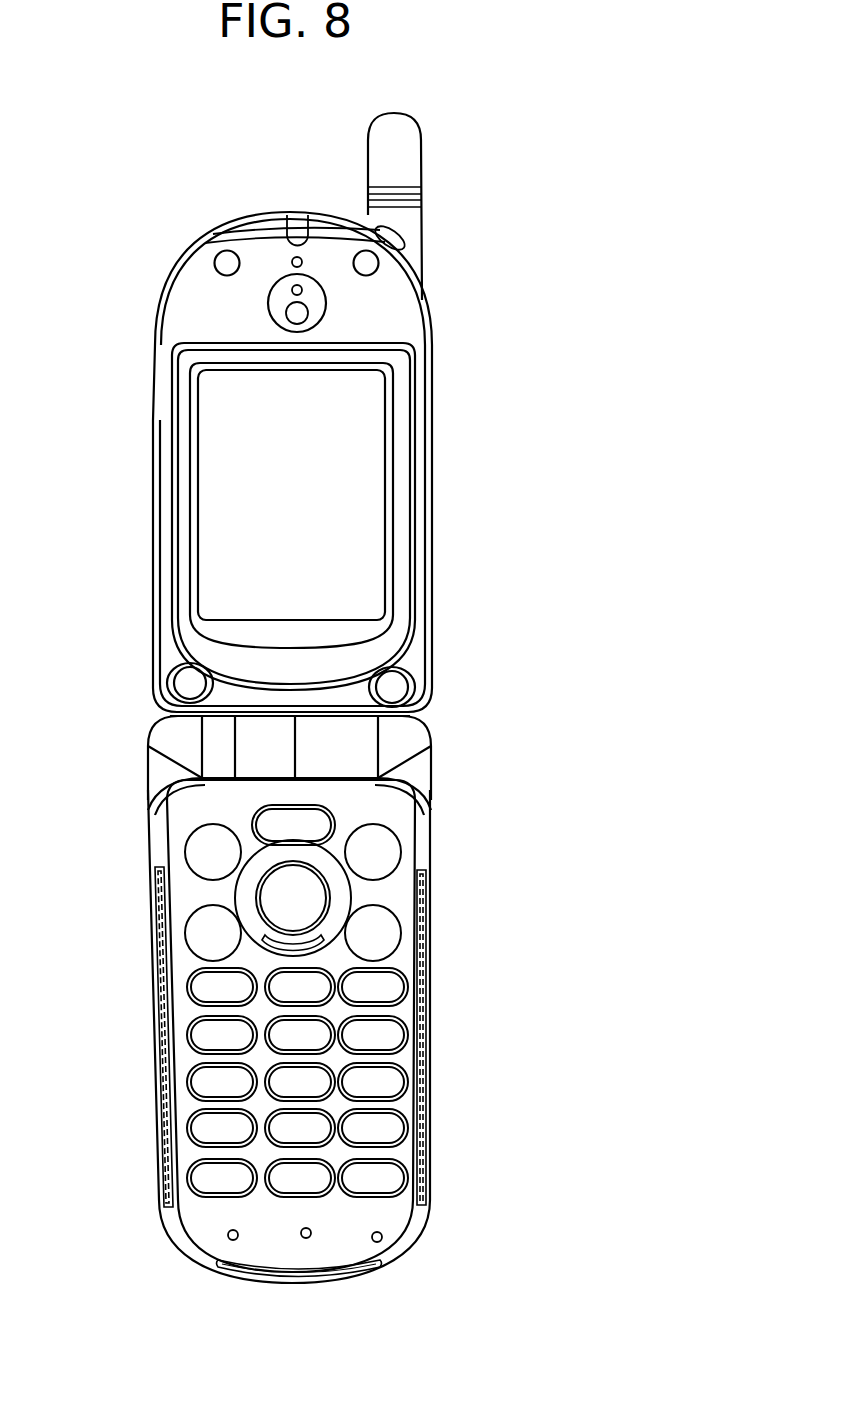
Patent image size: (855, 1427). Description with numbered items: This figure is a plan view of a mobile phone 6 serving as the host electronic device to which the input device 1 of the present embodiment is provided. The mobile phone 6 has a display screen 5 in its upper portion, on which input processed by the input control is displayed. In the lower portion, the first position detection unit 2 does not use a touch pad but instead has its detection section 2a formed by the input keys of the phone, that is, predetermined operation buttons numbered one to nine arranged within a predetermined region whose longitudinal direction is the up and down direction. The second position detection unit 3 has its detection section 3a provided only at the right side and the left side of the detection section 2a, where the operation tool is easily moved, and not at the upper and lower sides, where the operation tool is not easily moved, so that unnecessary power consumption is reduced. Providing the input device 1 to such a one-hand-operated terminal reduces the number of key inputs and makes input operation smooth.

The input device 1 is at (215, 1210).
The first position detection unit 2 is at (344, 1060).
The detection section 2a is at (396, 1128).
The second position detection unit 3 is at (448, 974).
The detection section 3a is at (158, 935).
The display screen 5 is at (212, 367).
The mobile phone 6 is at (460, 472).